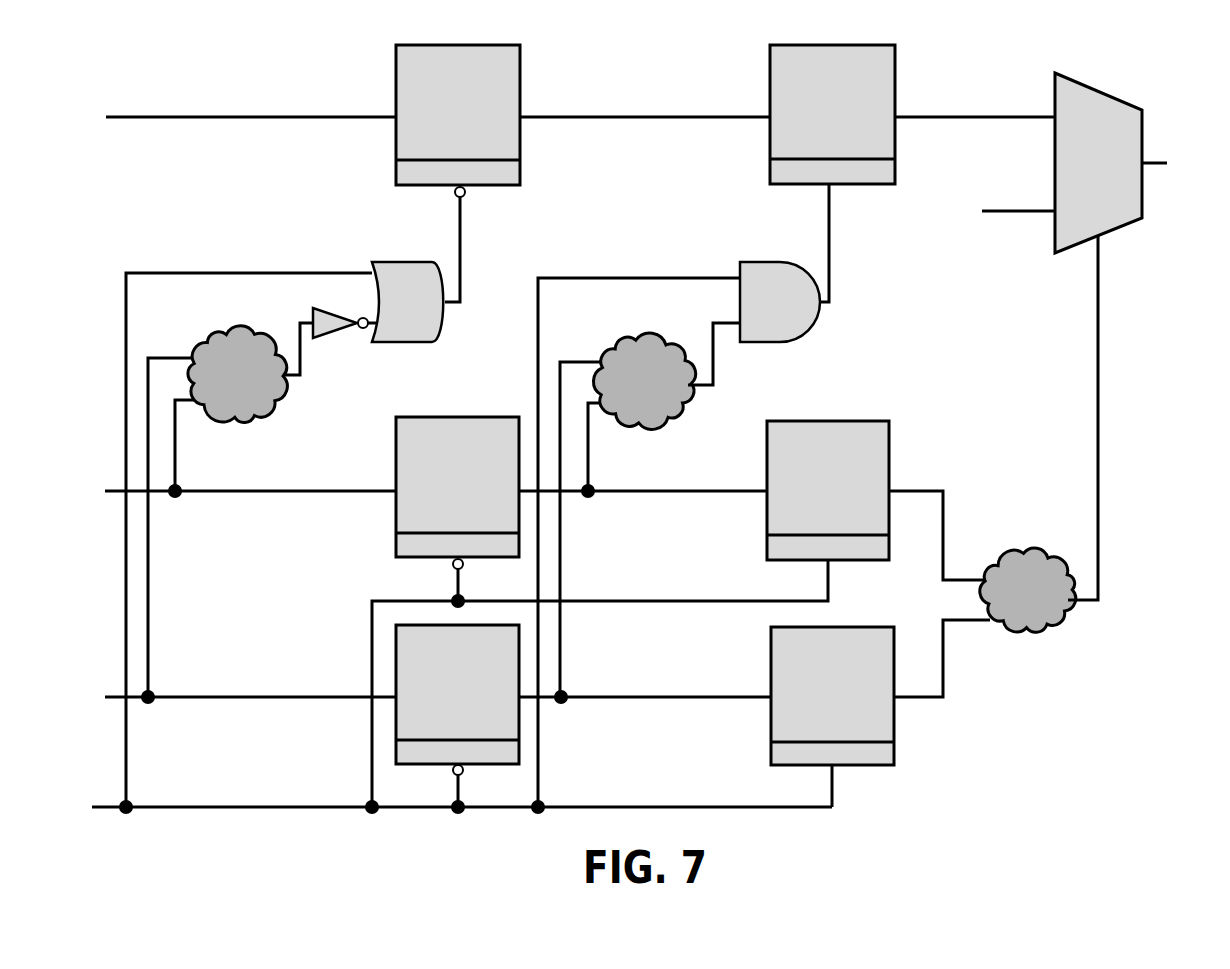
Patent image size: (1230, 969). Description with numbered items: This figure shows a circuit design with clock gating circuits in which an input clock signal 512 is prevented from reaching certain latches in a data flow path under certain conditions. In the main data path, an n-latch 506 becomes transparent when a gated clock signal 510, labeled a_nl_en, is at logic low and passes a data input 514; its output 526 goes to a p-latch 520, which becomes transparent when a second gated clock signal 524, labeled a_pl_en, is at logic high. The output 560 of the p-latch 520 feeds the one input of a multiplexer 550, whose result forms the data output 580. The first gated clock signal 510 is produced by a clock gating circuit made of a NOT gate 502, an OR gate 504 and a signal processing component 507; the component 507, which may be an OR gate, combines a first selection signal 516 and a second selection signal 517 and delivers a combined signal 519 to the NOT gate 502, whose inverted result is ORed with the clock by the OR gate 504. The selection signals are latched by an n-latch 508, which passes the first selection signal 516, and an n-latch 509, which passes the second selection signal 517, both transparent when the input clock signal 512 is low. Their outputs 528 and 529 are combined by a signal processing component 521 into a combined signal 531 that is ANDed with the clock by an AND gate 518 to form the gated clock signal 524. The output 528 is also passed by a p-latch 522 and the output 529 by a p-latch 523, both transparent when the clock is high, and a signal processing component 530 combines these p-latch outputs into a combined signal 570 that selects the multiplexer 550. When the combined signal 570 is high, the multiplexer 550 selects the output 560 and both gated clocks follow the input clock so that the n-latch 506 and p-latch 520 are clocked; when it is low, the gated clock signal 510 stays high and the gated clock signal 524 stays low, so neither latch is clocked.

The data input 514 is at (235, 100).
The n-latch 506 is at (428, 98).
The output of the n-latch 526 is at (645, 155).
The p-latch 520 is at (802, 97).
The output of the p-latch 560 is at (975, 82).
The multiplexer 550 is at (1098, 133).
The data output 580 is at (1179, 135).
The gated clock signal 510 is at (463, 233).
The gated clock signal 524 is at (894, 251).
The OR gate 504 is at (432, 319).
The NOT gate 502 is at (346, 349).
The combined signal 519 is at (281, 329).
The signal processing component 507 is at (252, 396).
The signal processing component 521 is at (631, 356).
The combined signal 531 is at (743, 362).
The AND gate 518 is at (803, 334).
The first selection signal 516 is at (210, 525).
The n-latch 508 is at (428, 499).
The output of the n-latch 528 is at (643, 525).
The p-latch 522 is at (856, 467).
The signal processing component 530 is at (1028, 557).
The combined signal 570 is at (1112, 417).
The n-latch 509 is at (393, 680).
The second selection signal 517 is at (212, 728).
The output of the n-latch 529 is at (645, 730).
The p-latch 523 is at (863, 709).
The input clock signal 512 is at (433, 831).